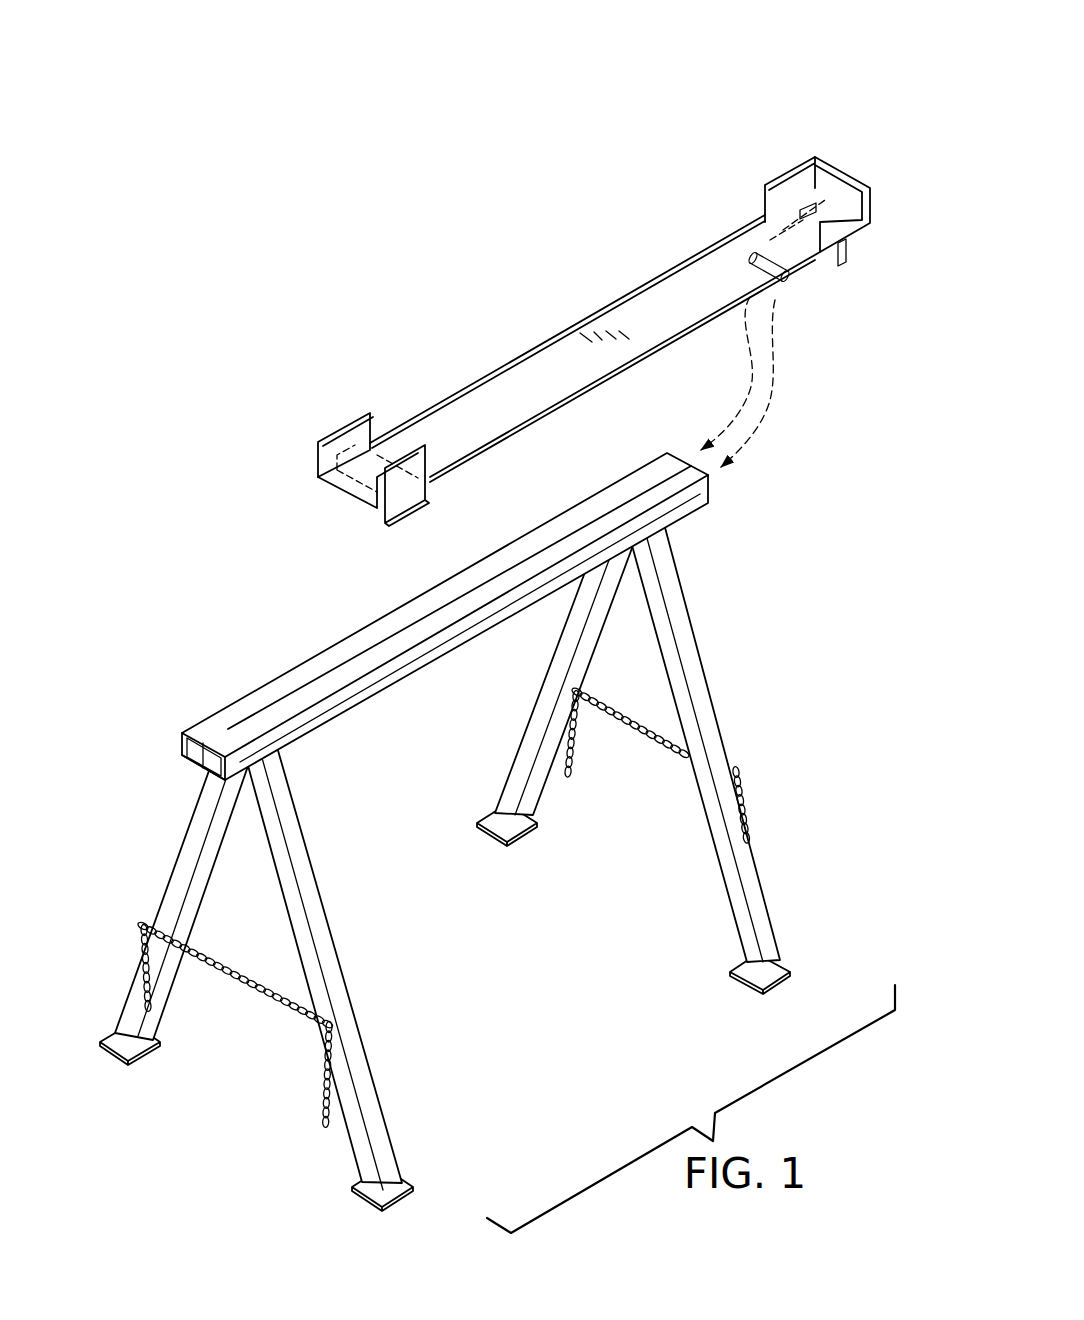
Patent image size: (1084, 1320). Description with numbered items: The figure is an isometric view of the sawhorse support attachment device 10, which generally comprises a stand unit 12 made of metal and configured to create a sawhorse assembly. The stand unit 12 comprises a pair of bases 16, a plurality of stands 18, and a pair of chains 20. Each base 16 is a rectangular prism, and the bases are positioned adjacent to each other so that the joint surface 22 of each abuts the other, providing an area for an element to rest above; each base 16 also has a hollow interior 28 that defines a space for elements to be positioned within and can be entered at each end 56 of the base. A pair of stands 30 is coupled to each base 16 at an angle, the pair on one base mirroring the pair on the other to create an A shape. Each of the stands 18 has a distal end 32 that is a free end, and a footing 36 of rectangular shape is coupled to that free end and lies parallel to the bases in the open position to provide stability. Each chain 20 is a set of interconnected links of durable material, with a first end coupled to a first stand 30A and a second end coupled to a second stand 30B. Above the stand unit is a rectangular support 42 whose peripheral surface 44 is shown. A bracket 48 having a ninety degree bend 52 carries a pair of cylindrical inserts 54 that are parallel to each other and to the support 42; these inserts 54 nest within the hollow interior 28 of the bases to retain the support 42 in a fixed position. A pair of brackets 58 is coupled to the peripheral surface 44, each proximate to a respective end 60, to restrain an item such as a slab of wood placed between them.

The sawhorse support attachment device 10 is at (897, 109).
The stand unit 12 is at (899, 410).
The base 16 is at (238, 638).
The stands 18 is at (773, 634).
The chain 20 is at (648, 752).
The joint surface 22 is at (200, 766).
The hollow interior 28 is at (183, 738).
The pair of stands 30 is at (548, 705).
The first stand 30A is at (349, 1003).
The second stand 30B is at (709, 667).
The distal end 32 is at (481, 811).
The footing 36 is at (503, 835).
The support 42 is at (279, 461).
The peripheral surface 44 is at (622, 303).
The bracket 48 is at (845, 255).
The ninety degree bend 52 is at (845, 240).
The inserts 54 is at (816, 265).
The end 56 is at (713, 511).
The brackets 58 is at (345, 437).
The end 60 is at (351, 396).